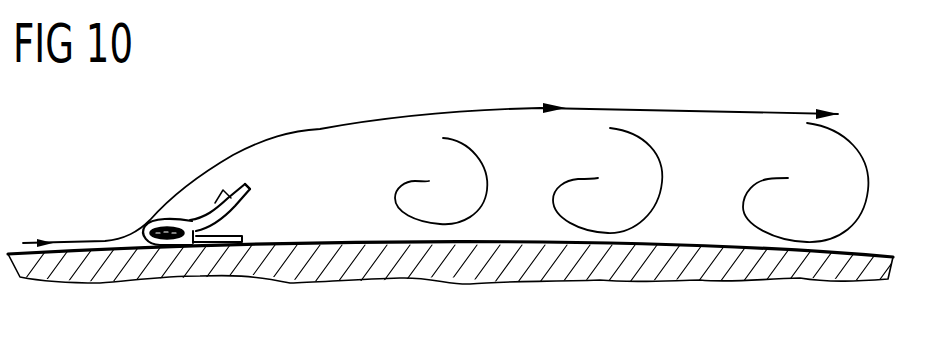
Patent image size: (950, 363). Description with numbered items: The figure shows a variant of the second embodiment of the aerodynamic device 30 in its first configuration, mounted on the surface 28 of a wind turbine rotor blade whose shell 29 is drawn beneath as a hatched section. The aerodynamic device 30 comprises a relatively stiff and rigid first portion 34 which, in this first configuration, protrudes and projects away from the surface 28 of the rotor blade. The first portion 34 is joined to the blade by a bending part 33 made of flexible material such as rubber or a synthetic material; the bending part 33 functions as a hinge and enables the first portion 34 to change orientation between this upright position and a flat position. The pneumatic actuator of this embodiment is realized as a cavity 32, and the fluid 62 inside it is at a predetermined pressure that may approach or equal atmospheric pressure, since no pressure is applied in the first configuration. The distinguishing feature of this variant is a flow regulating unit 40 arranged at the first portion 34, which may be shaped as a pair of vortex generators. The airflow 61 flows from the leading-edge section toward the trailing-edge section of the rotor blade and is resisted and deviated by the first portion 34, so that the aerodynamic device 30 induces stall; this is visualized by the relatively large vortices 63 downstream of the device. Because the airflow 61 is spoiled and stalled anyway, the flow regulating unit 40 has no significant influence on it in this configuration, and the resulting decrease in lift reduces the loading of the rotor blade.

The surface 28 is at (690, 241).
The shell 29 is at (495, 267).
The aerodynamic device 30 is at (174, 168).
The cavity 32 is at (157, 228).
The bending part 33 is at (192, 238).
The first portion 34 is at (247, 193).
The flow regulating unit 40 is at (217, 168).
The airflow 61 is at (505, 108).
The fluid 62 is at (168, 240).
The vortices 63 is at (480, 163).